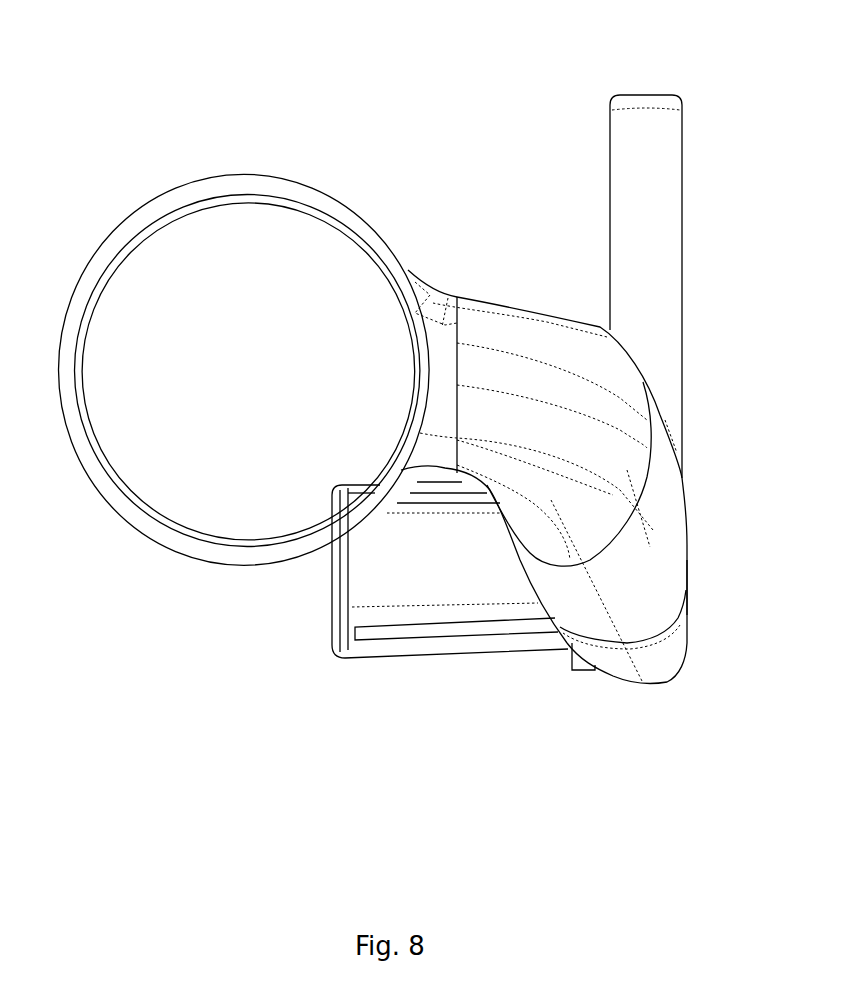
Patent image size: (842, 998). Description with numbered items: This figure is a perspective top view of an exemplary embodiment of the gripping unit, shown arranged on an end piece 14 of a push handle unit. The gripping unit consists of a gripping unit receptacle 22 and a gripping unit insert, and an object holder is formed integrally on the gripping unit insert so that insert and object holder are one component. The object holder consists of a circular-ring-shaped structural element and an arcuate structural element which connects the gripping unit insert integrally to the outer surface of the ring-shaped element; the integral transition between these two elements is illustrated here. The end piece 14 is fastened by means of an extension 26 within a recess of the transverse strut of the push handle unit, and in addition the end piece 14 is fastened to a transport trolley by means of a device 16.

The end piece 14 is at (688, 666).
The device 16 is at (668, 262).
The gripping unit receptacle 22 is at (625, 667).
The extension 26 is at (432, 640).